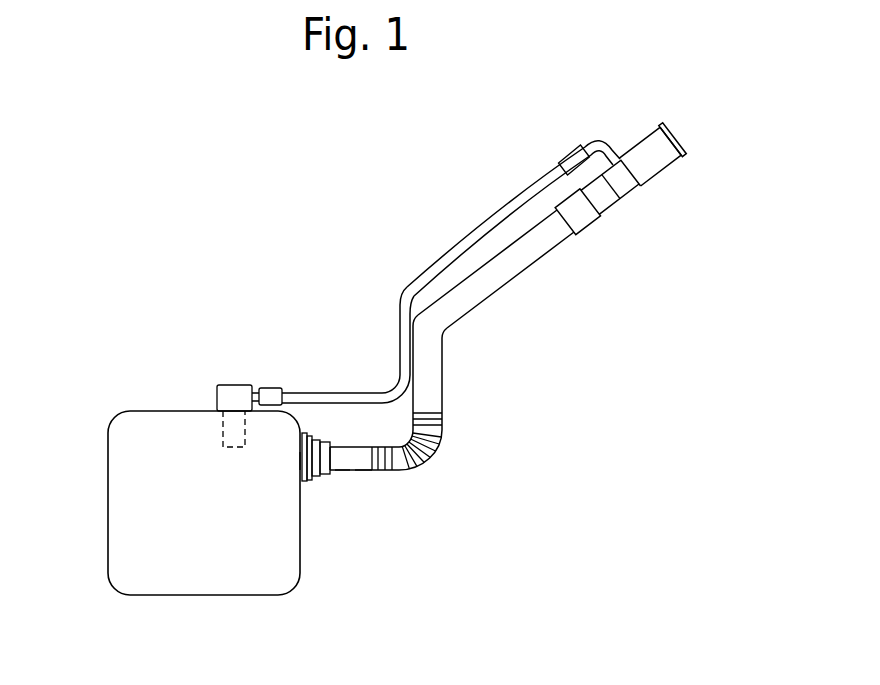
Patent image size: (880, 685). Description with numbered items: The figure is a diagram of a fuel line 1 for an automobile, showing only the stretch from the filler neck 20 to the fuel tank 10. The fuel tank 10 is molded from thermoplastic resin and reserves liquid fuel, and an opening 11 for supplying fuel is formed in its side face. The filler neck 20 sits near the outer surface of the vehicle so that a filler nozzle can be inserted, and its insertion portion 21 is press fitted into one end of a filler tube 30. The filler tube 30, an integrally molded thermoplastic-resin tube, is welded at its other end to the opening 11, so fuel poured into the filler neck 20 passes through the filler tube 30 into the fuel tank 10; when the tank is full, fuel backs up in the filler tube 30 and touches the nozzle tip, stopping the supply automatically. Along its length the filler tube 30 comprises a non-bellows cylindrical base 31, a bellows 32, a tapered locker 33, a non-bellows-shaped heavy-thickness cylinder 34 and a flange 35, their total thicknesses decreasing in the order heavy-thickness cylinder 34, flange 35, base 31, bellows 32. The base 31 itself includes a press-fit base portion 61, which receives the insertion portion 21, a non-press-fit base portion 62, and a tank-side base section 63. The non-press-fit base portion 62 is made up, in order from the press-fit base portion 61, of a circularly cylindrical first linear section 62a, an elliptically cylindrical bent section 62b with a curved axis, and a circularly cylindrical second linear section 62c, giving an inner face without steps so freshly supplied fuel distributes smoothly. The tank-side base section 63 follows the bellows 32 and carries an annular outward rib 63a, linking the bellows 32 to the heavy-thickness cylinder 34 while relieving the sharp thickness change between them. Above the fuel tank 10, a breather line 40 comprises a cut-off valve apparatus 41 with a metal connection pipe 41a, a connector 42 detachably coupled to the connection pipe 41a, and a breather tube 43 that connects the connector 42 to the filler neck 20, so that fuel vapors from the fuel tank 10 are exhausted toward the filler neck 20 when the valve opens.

The fuel line 1 is at (250, 289).
The fuel tank 10 is at (109, 473).
The opening 11 is at (297, 460).
The filler neck 20 is at (659, 177).
The insertion portion 21 is at (603, 221).
The filler tube 30 is at (438, 447).
The base 31 is at (535, 256).
The bellows 32 is at (419, 467).
The tapered locker 33 is at (323, 479).
The heavy-thickness cylinder 34 is at (312, 480).
The flange 35 is at (305, 480).
The breather line 40 is at (372, 392).
The cut-off valve apparatus 41 is at (216, 402).
The connection pipe 41a is at (253, 385).
The connector 42 is at (268, 387).
The breather tube 43 is at (452, 255).
The press-fit base portion 61 is at (588, 218).
The non-press-fit base portion 62 is at (577, 328).
The first linear section 62a is at (484, 298).
The bent section 62b is at (447, 334).
The second linear section 62c is at (442, 390).
The tank-side base section 63 is at (362, 475).
The rib 63a is at (340, 475).